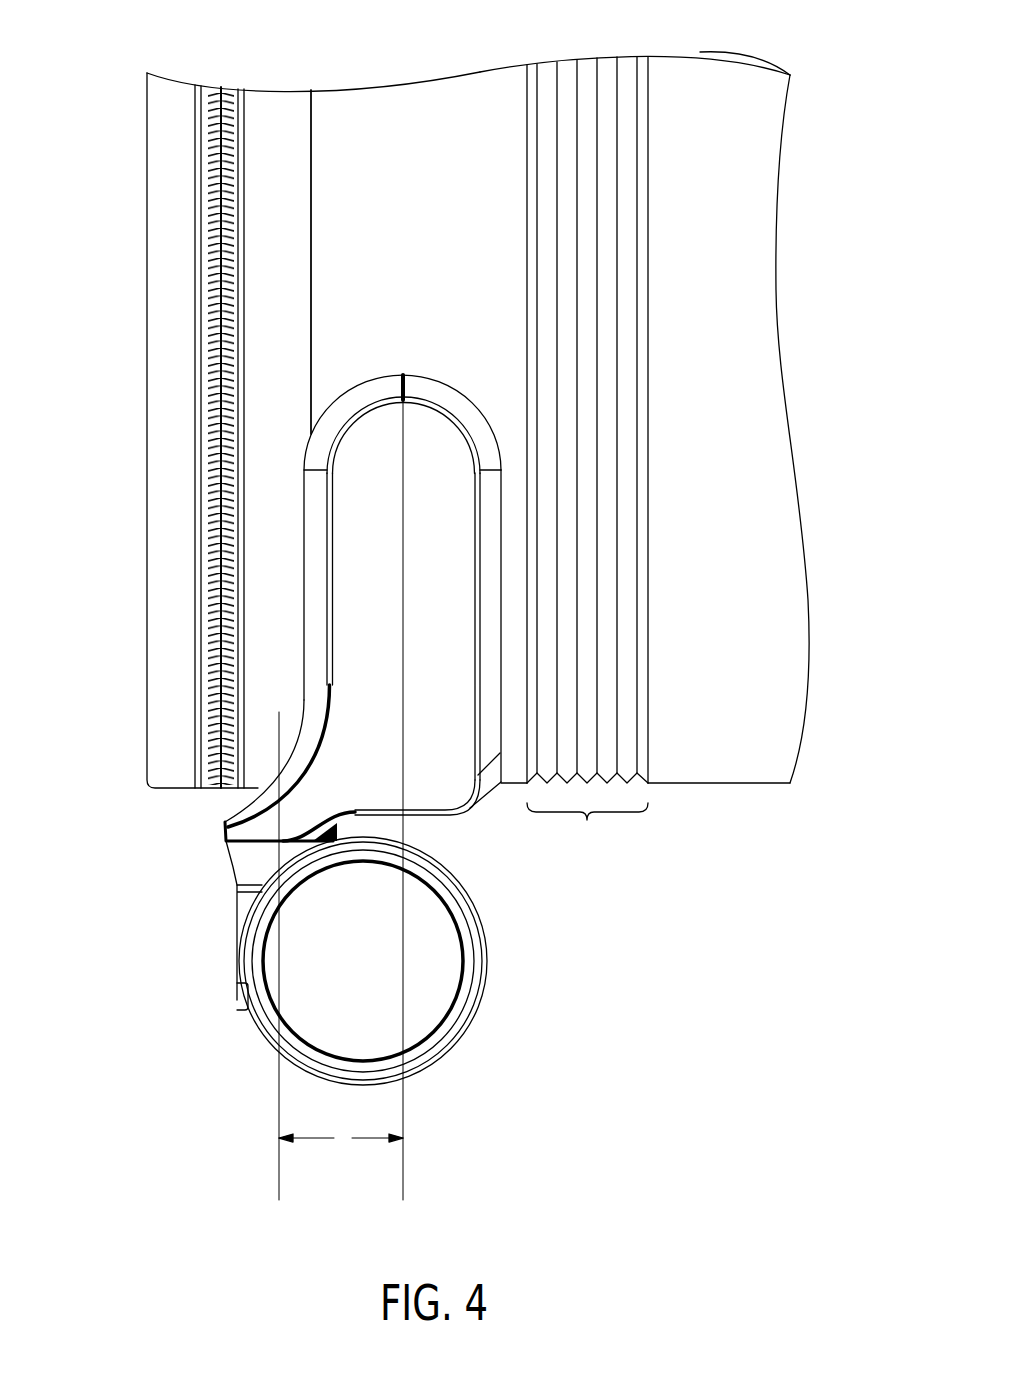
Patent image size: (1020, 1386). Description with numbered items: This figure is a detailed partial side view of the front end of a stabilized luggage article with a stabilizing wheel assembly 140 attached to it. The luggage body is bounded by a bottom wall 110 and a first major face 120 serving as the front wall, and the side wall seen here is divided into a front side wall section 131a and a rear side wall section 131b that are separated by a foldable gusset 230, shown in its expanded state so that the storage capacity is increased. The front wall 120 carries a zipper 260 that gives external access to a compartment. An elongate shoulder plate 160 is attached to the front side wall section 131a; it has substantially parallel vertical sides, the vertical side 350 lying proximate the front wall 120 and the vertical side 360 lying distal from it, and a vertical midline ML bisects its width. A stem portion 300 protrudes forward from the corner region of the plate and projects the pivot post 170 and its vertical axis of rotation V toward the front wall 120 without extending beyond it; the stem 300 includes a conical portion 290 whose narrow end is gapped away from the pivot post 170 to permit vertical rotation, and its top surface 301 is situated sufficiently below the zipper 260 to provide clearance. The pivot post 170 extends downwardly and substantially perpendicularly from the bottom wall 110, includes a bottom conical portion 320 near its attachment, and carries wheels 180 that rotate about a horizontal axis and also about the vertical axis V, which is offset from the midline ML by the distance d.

The bottom wall 110 is at (728, 800).
The first major face 120 is at (140, 400).
The front side wall section 131a is at (383, 120).
The rear side wall section 131b is at (718, 102).
The wheel assembly 140 is at (168, 1100).
The shoulder plate 160 is at (450, 760).
The pivot post 170 is at (245, 904).
The wheels 180 is at (484, 997).
The foldable gusset 230 is at (587, 823).
The zipper 260 is at (205, 270).
The conical portion 290 is at (243, 866).
The stem portion 300 is at (243, 830).
The top surface 301 is at (230, 803).
The bottom conical portion 320 is at (240, 1002).
The vertical side 350 is at (292, 628).
The vertical side 360 is at (515, 607).